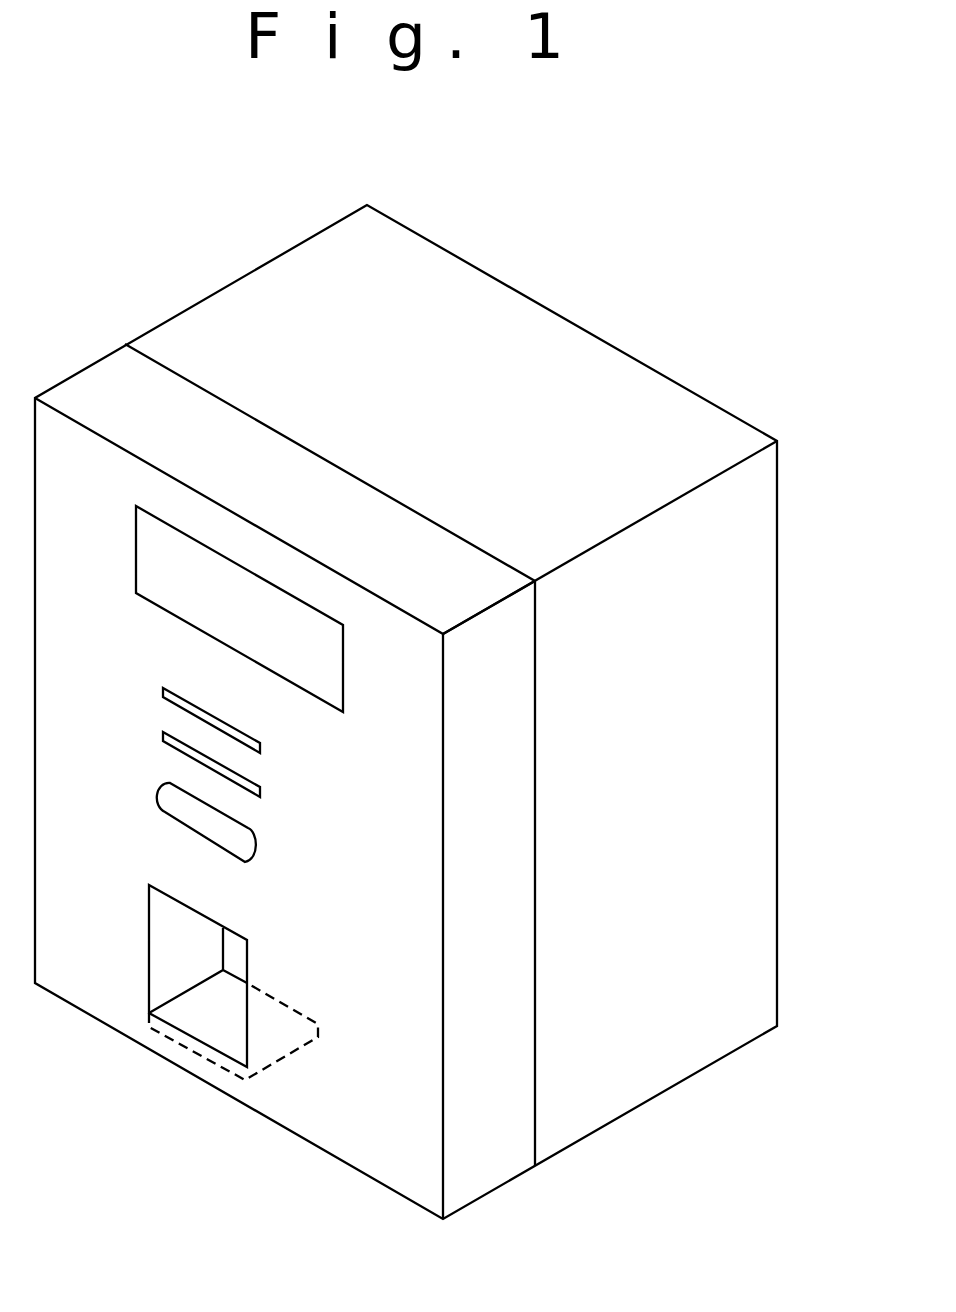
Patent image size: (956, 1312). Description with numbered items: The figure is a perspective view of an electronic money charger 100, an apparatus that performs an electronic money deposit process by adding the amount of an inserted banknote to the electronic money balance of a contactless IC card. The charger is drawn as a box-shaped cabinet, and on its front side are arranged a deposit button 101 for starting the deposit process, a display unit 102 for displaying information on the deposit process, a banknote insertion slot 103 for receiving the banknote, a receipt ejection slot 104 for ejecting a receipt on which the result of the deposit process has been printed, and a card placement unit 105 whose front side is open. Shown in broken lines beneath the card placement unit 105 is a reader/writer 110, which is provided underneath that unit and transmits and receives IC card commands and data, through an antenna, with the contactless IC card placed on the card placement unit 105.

The electronic money charger 100 is at (546, 274).
The deposit button 101 is at (252, 838).
The display unit 102 is at (250, 583).
The banknote insertion slot 103 is at (260, 747).
The receipt ejection slot 104 is at (260, 794).
The card placement unit 105 is at (165, 977).
The reader/writer 110 is at (196, 1050).